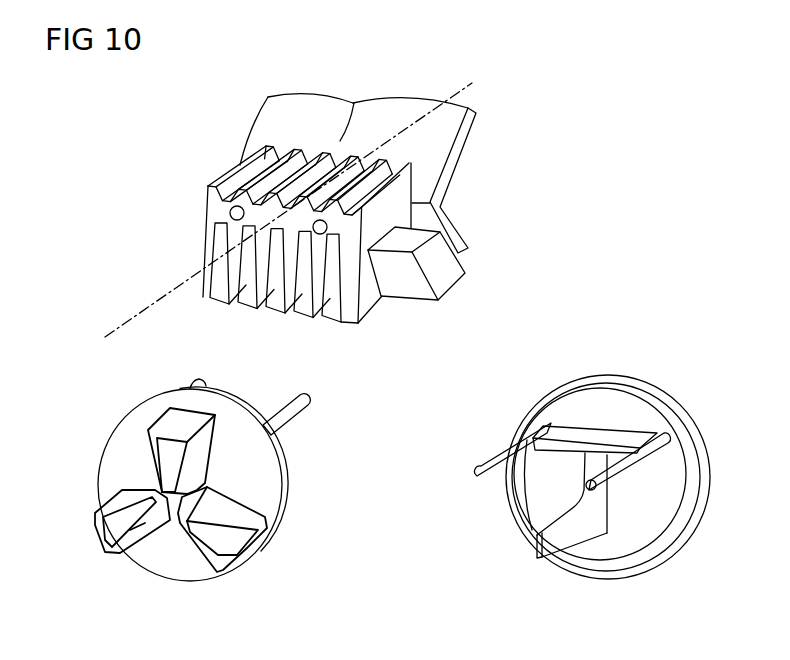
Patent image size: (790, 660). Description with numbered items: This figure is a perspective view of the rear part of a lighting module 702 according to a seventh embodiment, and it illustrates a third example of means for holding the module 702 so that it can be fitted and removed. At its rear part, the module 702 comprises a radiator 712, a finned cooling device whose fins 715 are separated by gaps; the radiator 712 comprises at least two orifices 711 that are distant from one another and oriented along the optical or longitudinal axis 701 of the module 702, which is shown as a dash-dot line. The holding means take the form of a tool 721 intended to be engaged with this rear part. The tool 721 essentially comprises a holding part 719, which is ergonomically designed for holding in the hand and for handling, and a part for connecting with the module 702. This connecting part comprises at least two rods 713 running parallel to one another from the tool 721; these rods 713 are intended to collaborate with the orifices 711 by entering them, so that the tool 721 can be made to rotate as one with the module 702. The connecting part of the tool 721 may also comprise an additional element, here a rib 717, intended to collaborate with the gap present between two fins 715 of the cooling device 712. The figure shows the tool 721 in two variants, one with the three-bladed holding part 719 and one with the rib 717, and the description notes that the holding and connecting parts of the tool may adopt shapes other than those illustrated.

The optical or longitudinal axis 701 is at (110, 332).
The lighting module 702 is at (370, 84).
The orifices 711 is at (313, 230).
The radiator 712 is at (184, 220).
The rods 713 is at (200, 383).
The fins 715 is at (258, 301).
The rib 717 is at (534, 551).
The holding part 719 is at (197, 551).
The tool 721 is at (100, 418).